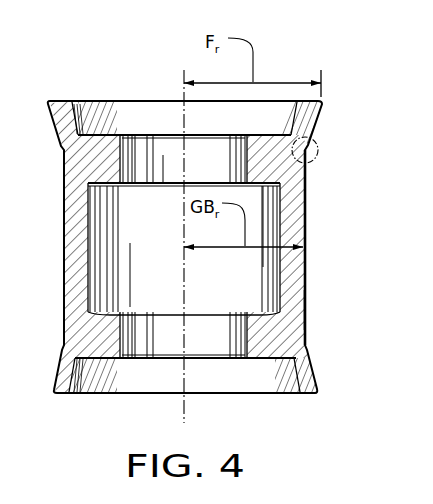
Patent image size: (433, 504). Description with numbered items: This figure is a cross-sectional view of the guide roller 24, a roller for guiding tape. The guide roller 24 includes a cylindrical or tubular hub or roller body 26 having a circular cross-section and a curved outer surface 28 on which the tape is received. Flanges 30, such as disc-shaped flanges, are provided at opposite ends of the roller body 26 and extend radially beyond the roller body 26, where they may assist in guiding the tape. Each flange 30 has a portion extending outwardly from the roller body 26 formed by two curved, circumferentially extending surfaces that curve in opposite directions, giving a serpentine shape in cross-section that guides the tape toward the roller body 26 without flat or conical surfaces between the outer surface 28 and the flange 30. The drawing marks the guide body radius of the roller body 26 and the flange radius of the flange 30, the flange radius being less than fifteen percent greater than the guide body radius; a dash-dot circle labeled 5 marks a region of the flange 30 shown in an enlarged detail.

The guide roller 24 is at (141, 66).
The roller body 26 is at (306, 264).
The curved outer surface 28 is at (318, 312).
The flange 30 is at (321, 116).
The detail region of FIG. 5 is at (320, 165).